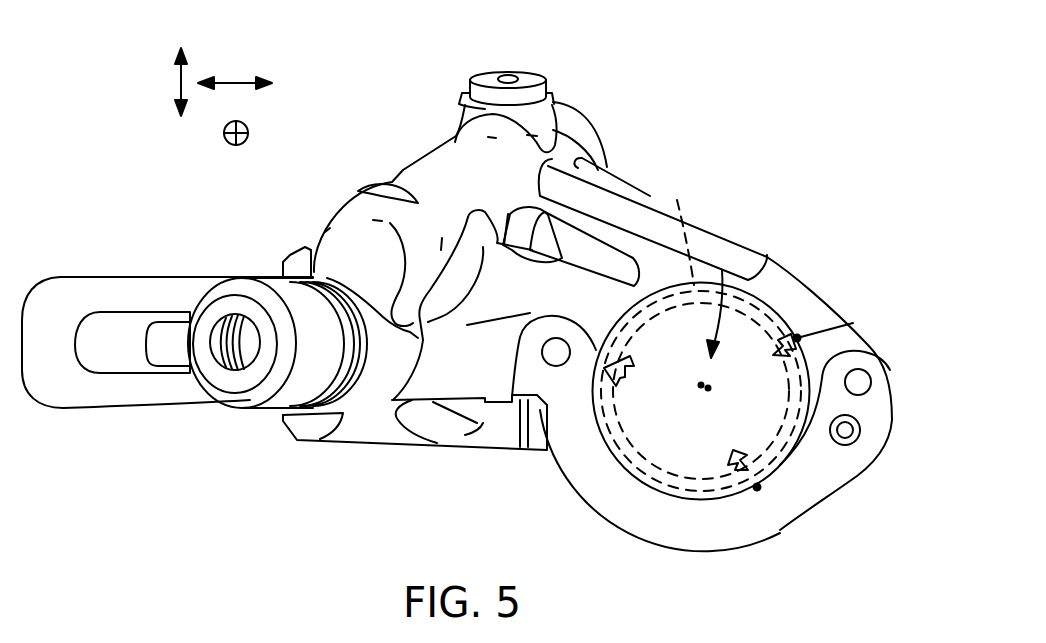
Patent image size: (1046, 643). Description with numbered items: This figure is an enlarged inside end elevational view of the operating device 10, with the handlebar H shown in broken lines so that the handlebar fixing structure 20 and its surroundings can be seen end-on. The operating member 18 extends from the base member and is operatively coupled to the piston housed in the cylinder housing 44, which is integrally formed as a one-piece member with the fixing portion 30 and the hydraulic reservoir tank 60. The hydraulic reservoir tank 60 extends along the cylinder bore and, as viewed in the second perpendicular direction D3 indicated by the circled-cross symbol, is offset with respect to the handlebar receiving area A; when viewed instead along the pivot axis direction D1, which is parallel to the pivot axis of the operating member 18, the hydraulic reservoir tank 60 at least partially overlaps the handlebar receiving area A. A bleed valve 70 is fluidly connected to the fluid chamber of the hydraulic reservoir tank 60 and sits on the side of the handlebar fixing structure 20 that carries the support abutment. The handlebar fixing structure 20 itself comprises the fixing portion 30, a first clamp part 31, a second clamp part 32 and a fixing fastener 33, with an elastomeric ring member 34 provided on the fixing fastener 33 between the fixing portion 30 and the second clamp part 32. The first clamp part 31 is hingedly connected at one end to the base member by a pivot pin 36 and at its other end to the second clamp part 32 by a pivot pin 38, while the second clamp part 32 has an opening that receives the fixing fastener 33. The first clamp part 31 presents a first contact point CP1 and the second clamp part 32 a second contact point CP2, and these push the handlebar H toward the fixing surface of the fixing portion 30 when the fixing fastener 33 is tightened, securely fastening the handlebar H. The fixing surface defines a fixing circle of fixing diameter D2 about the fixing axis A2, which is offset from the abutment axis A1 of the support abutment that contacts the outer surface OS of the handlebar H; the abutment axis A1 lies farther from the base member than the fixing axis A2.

The operating device 10 is at (773, 47).
The operating member 18 is at (136, 277).
The handlebar fixing structure 20 is at (755, 247).
The fixing portion 30 is at (628, 282).
The first clamp part 31 is at (590, 508).
The second clamp part 32 is at (808, 284).
The fixing fastener 33 is at (622, 180).
The ring member 34 is at (526, 226).
The pivot pin 36 is at (545, 347).
The pivot pin 38 is at (852, 447).
The cylinder housing 44 is at (377, 380).
The hydraulic reservoir tank 60 is at (412, 163).
The bleed valve 70 is at (481, 72).
The handlebar receiving area A is at (714, 299).
The abutment axis A1 is at (708, 392).
The fixing axis A2 is at (700, 388).
The outer surface OS is at (701, 332).
The handlebar H is at (666, 498).
The first contact point CP1 is at (757, 490).
The second contact point CP2 is at (797, 338).
The pivot axis direction D1 is at (178, 82).
The fixing diameter D2 is at (237, 83).
The second perpendicular direction D3 is at (228, 145).